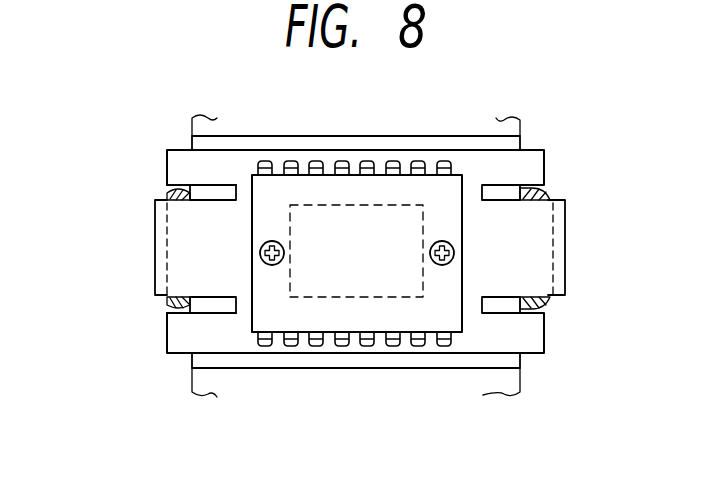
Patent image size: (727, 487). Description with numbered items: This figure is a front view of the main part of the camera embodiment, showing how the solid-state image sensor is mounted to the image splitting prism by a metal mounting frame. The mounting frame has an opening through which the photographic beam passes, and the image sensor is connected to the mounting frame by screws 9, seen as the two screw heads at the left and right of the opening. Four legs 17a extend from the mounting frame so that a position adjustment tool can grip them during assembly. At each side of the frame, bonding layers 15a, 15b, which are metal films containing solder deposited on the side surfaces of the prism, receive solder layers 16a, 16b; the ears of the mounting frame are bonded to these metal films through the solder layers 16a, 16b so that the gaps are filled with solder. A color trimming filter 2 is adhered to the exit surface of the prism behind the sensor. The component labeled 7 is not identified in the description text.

The color trimming filter 2 is at (507, 142).
The semiconductor device package 7 is at (356, 159).
The screws 9 is at (272, 266).
The bonding layer 15a is at (187, 296).
The bonding layer 15b is at (525, 297).
The solder layer 16a is at (168, 304).
The solder layer 16b is at (547, 307).
The legs 17a is at (175, 165).